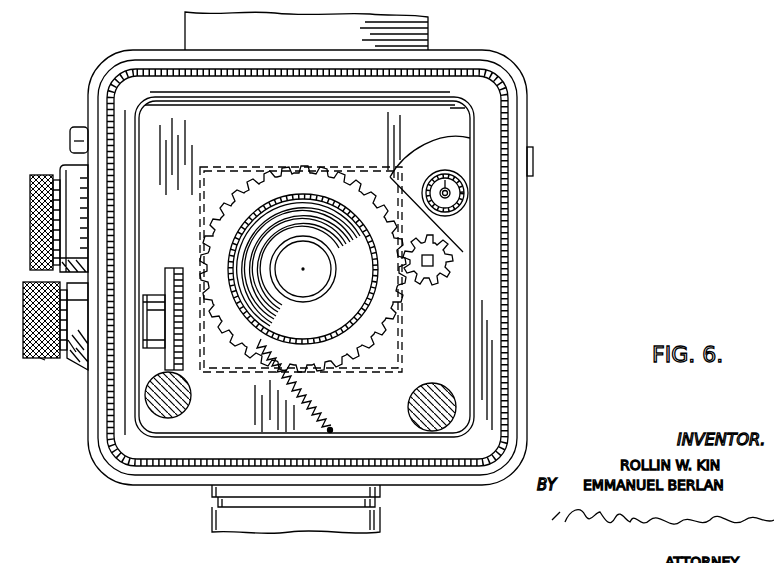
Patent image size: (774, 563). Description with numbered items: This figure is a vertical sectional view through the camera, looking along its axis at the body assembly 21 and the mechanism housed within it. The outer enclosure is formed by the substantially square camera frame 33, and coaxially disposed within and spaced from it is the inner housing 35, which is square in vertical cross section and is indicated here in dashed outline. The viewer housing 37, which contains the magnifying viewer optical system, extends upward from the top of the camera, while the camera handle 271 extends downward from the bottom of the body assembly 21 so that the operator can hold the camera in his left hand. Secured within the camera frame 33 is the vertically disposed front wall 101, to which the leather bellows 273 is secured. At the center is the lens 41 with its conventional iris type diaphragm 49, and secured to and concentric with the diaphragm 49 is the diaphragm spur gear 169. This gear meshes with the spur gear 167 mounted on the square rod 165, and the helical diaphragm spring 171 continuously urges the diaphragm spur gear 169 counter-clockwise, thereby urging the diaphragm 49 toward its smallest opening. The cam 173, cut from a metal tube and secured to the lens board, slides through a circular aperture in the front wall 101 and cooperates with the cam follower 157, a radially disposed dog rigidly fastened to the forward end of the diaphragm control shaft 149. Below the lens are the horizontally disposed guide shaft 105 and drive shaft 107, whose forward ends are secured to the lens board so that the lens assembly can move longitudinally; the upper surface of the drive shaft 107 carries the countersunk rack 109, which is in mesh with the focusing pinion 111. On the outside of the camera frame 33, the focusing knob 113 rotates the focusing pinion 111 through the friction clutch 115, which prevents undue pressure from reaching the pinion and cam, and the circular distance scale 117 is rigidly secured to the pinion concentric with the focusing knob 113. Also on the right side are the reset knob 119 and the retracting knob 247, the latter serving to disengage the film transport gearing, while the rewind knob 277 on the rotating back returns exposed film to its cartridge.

The body assembly 21 is at (450, 487).
The camera frame 33 is at (150, 477).
The inner housing 35 is at (250, 167).
The viewer housing 37 is at (203, 33).
The lens 41 is at (298, 283).
The diaphragm 49 is at (318, 290).
The front wall 101 is at (155, 138).
The guide shaft 105 is at (445, 402).
The drive shaft 107 is at (153, 412).
The rack 109 is at (140, 403).
The focusing pinion 111 is at (162, 300).
The focusing knob 113 is at (37, 360).
The friction clutch 115 is at (153, 312).
The distance scale 117 is at (70, 378).
The reset knob 119 is at (46, 176).
The diaphragm control shaft 149 is at (448, 195).
The cam follower 157 is at (462, 180).
The square rod 165 is at (435, 262).
The spur gear 167 is at (440, 275).
The diaphragm spur gear 169 is at (392, 306).
The diaphragm spring 171 is at (312, 405).
The cam 173 is at (455, 208).
The retracting knob 247 is at (75, 135).
The camera handle 271 is at (245, 516).
The bellows 273 is at (478, 112).
The rewind knob 277 is at (535, 160).